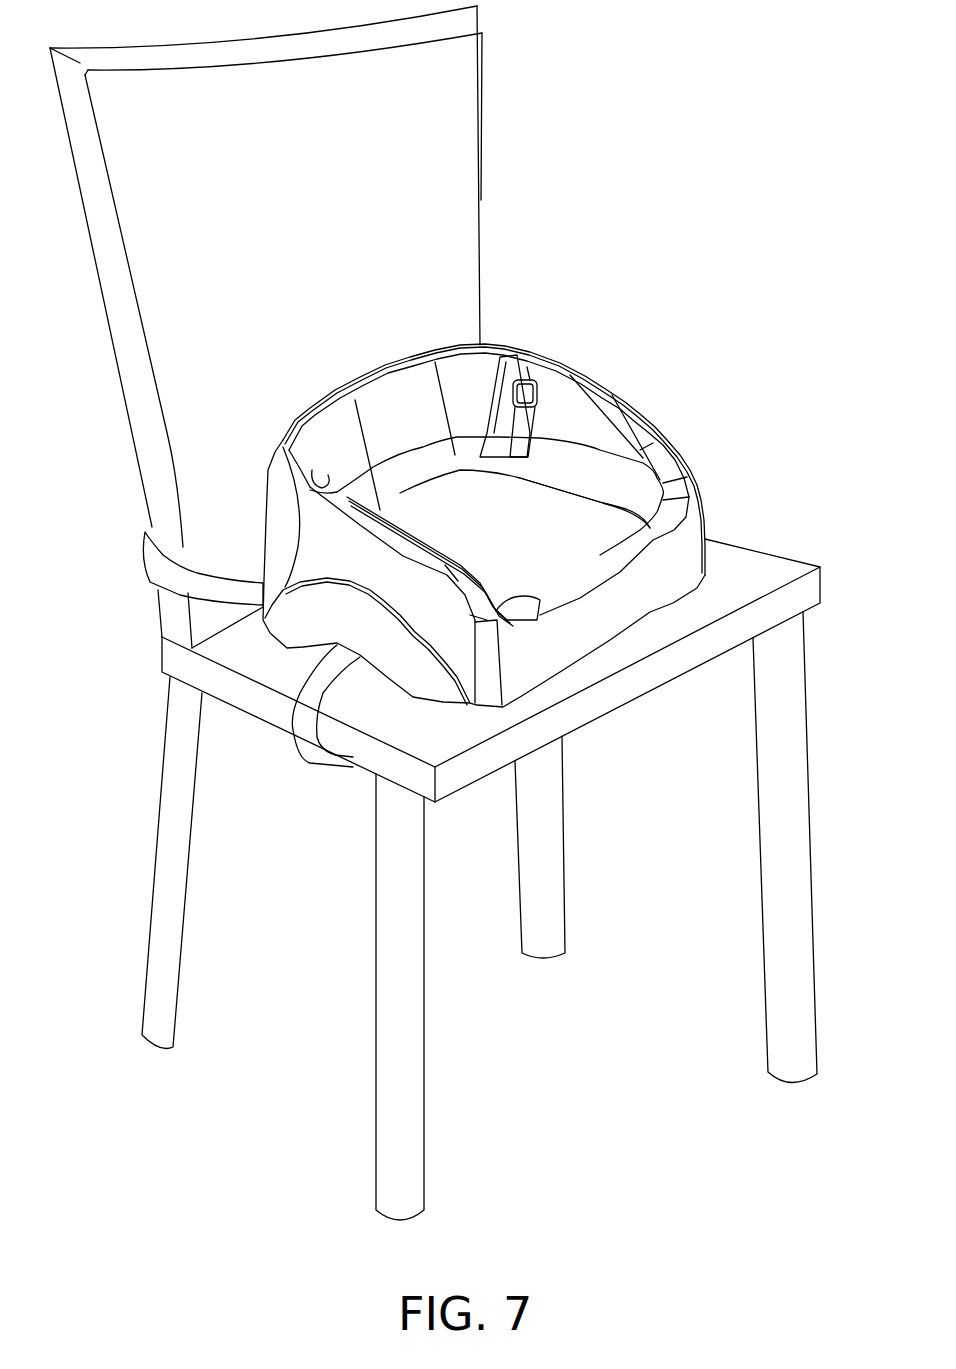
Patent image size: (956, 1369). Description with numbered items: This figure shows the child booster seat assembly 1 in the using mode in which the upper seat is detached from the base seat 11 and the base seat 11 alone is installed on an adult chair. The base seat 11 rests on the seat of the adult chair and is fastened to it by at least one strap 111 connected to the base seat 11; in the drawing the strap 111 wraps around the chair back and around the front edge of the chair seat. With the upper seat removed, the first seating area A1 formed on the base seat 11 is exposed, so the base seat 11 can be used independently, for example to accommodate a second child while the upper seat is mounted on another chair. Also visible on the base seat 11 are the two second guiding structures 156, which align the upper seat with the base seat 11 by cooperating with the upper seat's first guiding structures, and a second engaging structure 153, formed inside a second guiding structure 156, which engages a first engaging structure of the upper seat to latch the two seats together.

The child booster seat assembly 1 is at (658, 195).
The base seat 11 is at (682, 563).
The strap 111 is at (153, 572).
The second engaging structure 153 is at (533, 383).
The second guiding structure 156 is at (510, 365).
The first seating area A1 is at (590, 445).